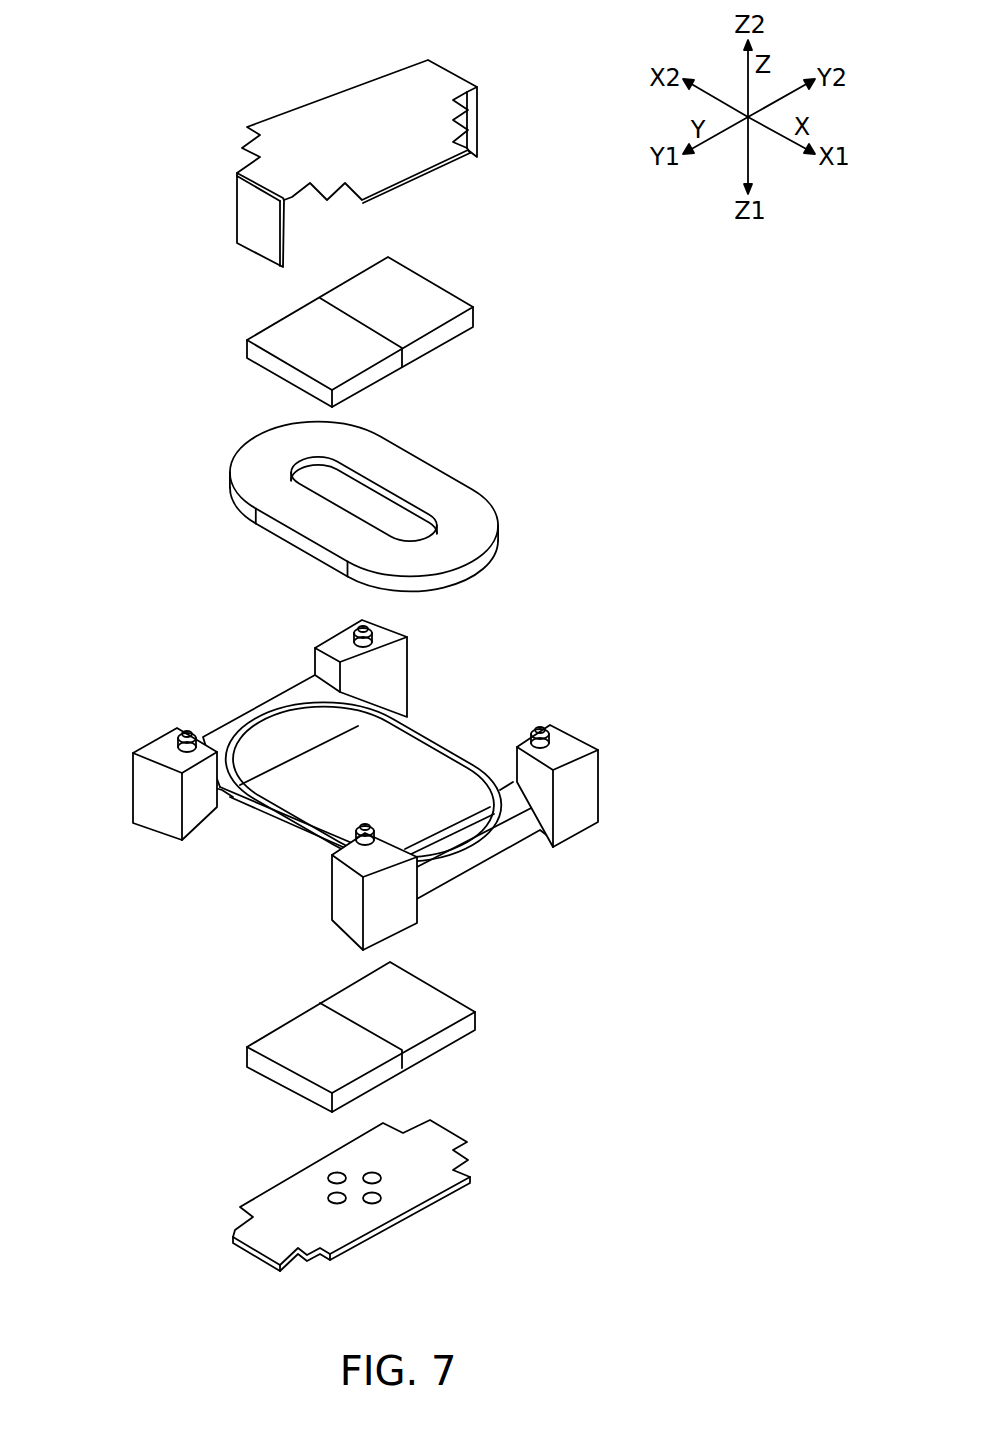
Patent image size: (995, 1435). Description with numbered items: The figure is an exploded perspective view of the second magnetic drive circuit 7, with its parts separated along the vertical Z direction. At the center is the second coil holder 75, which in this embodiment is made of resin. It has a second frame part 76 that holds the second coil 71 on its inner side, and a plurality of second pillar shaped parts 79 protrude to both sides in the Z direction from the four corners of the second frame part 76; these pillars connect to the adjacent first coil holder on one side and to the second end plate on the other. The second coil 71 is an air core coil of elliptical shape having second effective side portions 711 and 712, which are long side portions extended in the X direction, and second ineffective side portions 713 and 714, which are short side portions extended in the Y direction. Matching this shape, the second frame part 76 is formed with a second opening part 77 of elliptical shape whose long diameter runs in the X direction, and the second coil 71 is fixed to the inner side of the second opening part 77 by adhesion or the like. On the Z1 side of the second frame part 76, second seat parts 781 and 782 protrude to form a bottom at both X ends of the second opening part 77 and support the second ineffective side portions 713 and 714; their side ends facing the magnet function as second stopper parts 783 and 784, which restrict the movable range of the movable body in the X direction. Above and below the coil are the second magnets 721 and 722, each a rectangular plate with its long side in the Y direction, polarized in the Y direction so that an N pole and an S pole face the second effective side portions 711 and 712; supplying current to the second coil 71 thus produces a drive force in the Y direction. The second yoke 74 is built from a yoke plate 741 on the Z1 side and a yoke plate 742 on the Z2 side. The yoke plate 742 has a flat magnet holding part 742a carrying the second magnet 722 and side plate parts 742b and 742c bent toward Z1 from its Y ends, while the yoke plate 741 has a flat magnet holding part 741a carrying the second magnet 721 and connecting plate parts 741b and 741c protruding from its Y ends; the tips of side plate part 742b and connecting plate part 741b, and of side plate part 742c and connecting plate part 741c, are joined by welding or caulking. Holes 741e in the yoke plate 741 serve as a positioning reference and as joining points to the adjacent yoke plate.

The second magnetic drive circuit 7 is at (62, 226).
The second coil 71 is at (372, 507).
The second effective side portion 711 is at (320, 527).
The second effective side portion 712 is at (400, 468).
The second ineffective side portion 713 is at (472, 545).
The second ineffective side portion 714 is at (275, 443).
The second magnet 721 is at (455, 1010).
The second magnet 722 is at (447, 298).
The second yoke 74 is at (369, 669).
The yoke plate 741 is at (372, 1215).
The magnet holding part 741a is at (303, 1180).
The connecting plate part 741b is at (263, 1253).
The connecting plate part 741c is at (458, 1142).
The holes 741e is at (338, 1205).
The yoke plate 742 is at (366, 152).
The magnet holding part 742a is at (367, 95).
The side plate part 742b is at (257, 232).
The side plate part 742c is at (470, 150).
The second coil holder 75 is at (368, 776).
The second frame part 76 is at (365, 787).
The second opening part 77 is at (285, 820).
The second seat part 781 is at (465, 845).
The second seat part 782 is at (270, 770).
The second stopper part 783 is at (452, 812).
The second stopper part 784 is at (300, 770).
The second pillar shaped part 79 is at (173, 740).